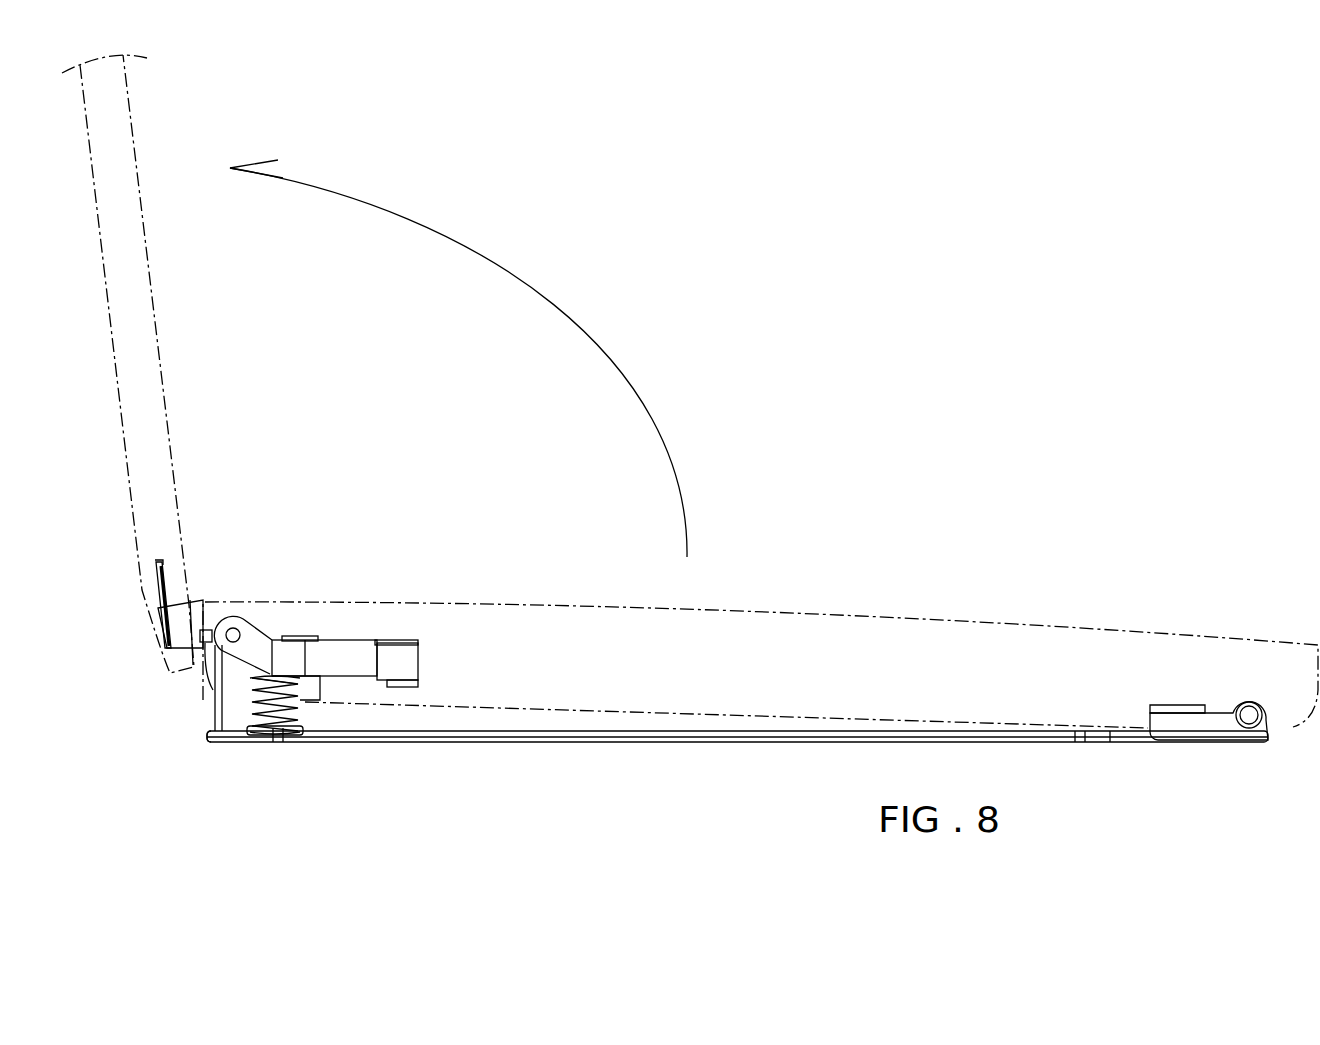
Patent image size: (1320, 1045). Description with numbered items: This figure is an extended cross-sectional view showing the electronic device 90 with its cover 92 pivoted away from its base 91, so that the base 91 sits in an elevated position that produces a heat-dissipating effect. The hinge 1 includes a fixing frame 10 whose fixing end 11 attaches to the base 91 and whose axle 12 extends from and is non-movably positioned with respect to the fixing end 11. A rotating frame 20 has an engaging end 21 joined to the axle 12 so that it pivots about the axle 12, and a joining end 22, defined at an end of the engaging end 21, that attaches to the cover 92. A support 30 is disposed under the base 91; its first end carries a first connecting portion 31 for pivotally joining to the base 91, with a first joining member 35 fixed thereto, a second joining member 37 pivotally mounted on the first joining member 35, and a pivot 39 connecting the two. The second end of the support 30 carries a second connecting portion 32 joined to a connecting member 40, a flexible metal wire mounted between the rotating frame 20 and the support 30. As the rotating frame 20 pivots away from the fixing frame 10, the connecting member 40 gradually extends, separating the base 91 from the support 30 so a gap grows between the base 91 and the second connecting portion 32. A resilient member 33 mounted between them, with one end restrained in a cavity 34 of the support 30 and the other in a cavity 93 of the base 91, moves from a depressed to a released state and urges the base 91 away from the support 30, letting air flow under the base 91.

The hinge 1 is at (349, 623).
The fixing frame 10 is at (337, 713).
The fixing end 11 is at (400, 690).
The axle 12 is at (236, 630).
The rotating frame 20 is at (140, 647).
The engaging end 21 is at (178, 623).
The joining end 22 is at (158, 582).
The support 30 is at (729, 773).
The first connecting portion 31 is at (1129, 757).
The second connecting portion 32 is at (195, 756).
The resilient member 33 is at (278, 727).
The cavity 34 is at (245, 722).
The first joining member 35 is at (1268, 717).
The second joining member 37 is at (1180, 723).
The pivot 39 is at (1249, 722).
The connecting member 40 is at (192, 705).
The electronic device 90 is at (1069, 407).
The base 91 is at (1227, 660).
The cover 92 is at (130, 272).
The cavity 93 is at (298, 718).